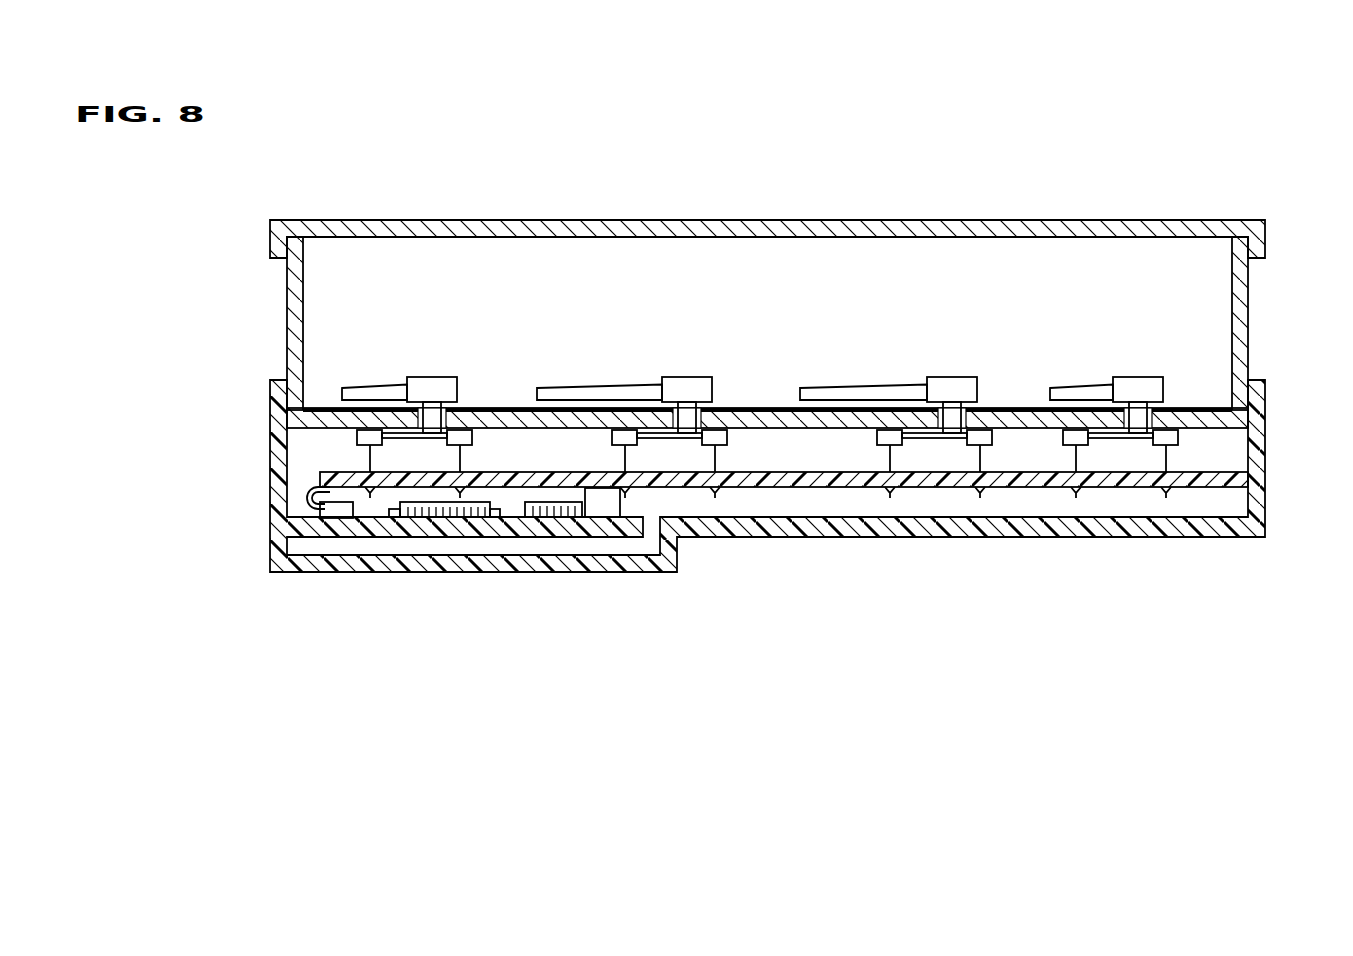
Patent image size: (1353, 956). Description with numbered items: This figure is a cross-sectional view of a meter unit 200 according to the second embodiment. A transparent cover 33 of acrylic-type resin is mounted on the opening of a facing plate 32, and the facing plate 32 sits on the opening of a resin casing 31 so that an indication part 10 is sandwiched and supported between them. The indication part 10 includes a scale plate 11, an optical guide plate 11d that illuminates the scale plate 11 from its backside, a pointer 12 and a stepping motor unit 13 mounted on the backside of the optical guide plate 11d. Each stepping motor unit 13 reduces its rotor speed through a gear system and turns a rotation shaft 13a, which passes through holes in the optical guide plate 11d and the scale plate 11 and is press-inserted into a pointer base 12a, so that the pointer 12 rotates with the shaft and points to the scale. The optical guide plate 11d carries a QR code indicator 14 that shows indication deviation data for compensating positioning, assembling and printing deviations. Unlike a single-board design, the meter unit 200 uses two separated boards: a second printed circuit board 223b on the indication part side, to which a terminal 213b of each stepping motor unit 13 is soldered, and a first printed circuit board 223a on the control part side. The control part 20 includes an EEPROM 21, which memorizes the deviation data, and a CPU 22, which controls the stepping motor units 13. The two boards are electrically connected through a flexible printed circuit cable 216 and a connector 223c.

The meter unit 200 is at (1258, 202).
The cover 33 is at (335, 220).
The facing plate 32 is at (288, 309).
The control part 20 is at (362, 543).
The indication part 10 is at (1183, 365).
The scale plate 11 is at (754, 411).
The optical guide plate 11d is at (304, 436).
The QR code indicator 14 is at (1215, 446).
The pointer 12 is at (378, 388).
The pointer base 12a is at (430, 378).
The stepping motor unit 13 is at (364, 469).
The rotation shaft 13a is at (418, 438).
The resin casing 31 is at (272, 478).
The terminal 213b is at (460, 498).
The second printed circuit board 223b is at (1010, 488).
The flexible printed circuit cable 216 is at (320, 503).
The connector 223c is at (320, 519).
The CPU 22 is at (448, 518).
The EEPROM 21 is at (558, 518).
The first printed circuit board 223a is at (513, 538).